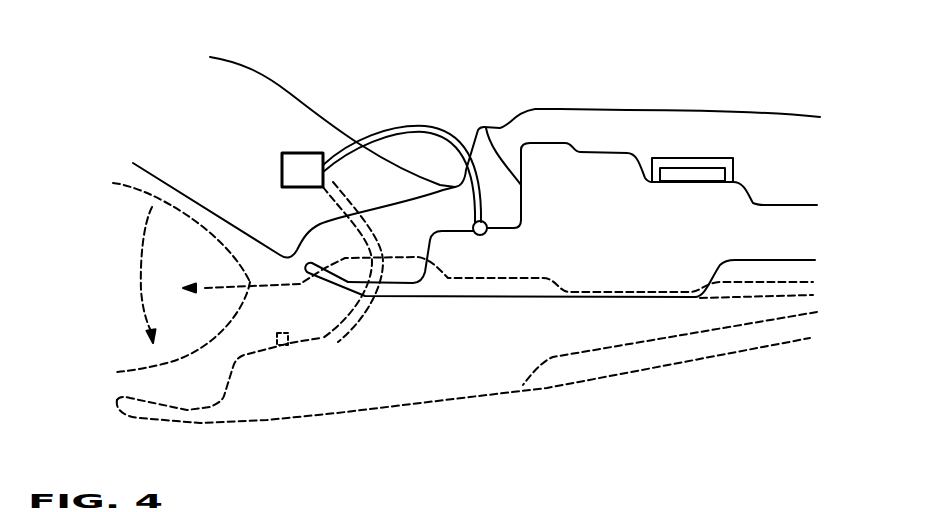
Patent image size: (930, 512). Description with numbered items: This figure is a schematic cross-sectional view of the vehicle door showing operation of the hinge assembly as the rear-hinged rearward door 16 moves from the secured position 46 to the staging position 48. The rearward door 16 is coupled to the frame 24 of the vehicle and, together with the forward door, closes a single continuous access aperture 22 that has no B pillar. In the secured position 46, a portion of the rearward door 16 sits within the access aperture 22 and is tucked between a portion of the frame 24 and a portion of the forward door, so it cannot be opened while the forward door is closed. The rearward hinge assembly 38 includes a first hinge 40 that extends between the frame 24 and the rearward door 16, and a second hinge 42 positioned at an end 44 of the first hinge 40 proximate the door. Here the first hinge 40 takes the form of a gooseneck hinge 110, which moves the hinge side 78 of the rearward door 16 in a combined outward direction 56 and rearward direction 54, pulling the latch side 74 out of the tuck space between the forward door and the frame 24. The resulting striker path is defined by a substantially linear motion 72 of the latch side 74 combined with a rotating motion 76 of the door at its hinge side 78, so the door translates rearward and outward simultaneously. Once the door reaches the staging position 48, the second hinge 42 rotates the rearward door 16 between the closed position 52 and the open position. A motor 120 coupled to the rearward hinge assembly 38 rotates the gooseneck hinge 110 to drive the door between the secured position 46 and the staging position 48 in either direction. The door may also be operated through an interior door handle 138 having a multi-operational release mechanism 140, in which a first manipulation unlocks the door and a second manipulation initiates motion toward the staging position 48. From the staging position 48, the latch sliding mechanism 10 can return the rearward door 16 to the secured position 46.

The latch sliding mechanism 10 is at (379, 86).
The rearward door 16 is at (732, 204).
The access aperture 22 is at (548, 110).
The frame 24 is at (332, 116).
The rearward hinge assembly 38 is at (270, 141).
The first hinge 40 is at (423, 126).
The second hinge 42 is at (484, 234).
The end 44 is at (488, 222).
The secured position 46 is at (817, 188).
The staging position 48 is at (762, 361).
The closed position 52 is at (830, 247).
The rearward direction 54 is at (269, 222).
The outward direction 56 is at (143, 233).
The linear motion 72 is at (165, 332).
The latch side 74 is at (740, 511).
The rotating motion 76 is at (143, 293).
The hinge side 78 is at (486, 128).
The gooseneck hinge 110 is at (377, 134).
The motor 120 is at (282, 165).
The interior door handle 138 is at (694, 158).
The multi-operational release mechanism 140 is at (730, 142).